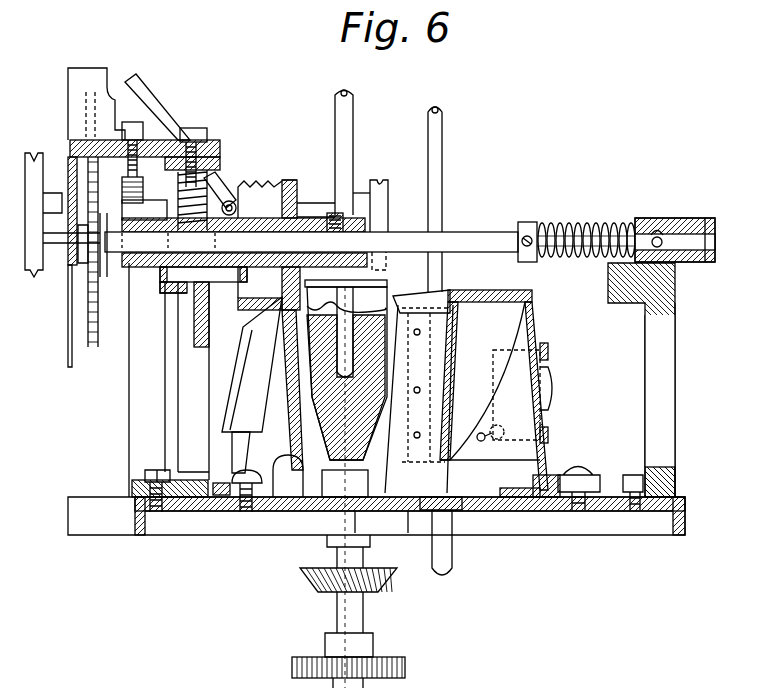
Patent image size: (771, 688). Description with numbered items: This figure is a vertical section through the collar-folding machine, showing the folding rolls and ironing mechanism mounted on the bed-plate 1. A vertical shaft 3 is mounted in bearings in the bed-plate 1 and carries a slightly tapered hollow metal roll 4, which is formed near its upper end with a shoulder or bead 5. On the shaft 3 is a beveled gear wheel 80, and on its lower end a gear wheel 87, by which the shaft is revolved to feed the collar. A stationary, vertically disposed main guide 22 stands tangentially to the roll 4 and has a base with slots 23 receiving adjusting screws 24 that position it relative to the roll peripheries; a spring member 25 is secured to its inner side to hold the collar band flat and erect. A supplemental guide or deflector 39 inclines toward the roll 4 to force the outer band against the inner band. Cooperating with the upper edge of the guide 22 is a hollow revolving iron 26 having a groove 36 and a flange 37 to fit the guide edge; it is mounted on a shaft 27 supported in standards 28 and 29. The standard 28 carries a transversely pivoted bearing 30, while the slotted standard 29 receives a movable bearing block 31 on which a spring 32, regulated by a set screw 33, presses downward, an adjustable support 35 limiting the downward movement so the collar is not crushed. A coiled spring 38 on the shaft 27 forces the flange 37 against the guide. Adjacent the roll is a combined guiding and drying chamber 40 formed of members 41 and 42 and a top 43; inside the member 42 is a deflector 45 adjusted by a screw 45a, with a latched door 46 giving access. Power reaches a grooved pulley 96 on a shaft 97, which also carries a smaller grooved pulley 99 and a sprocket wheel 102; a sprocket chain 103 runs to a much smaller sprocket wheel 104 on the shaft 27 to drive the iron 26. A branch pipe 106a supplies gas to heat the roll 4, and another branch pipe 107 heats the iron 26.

The bed-plate 1 is at (657, 509).
The vertical shaft 3 is at (341, 465).
The metal roll 4 is at (398, 317).
The shoulder or bead 5 is at (393, 287).
The main guide 22 is at (263, 510).
The slots 23 is at (222, 510).
The adjusting screws 24 is at (247, 510).
The spring member 25 is at (297, 368).
The hollow revolving iron 26 is at (280, 185).
The shaft 27 is at (457, 238).
The standard 28 is at (663, 340).
The standard 29 is at (190, 433).
The pivoted bearing 30 is at (667, 218).
The bearing block 31 is at (162, 297).
The spring 32 is at (228, 200).
The set screw 33 is at (197, 133).
The adjustable support 35 is at (203, 275).
The groove 36 is at (297, 182).
The flange 37 is at (300, 180).
The coiled spring 38 is at (552, 225).
The supplemental guide or deflector 39 is at (259, 403).
The combined guiding and drying chamber 40 is at (494, 396).
The member 41 is at (452, 430).
The member 42 is at (543, 457).
The top 43 is at (500, 285).
The deflector 45 is at (518, 343).
The screw 45a is at (500, 425).
The door 46 is at (543, 417).
The beveled gear wheel 80 is at (307, 580).
The gear wheel 87 is at (382, 657).
The grooved pulley 96 is at (33, 158).
The shaft 97 is at (317, 203).
The grooved pulley 99 is at (378, 216).
The sprocket wheel 102 is at (92, 348).
The sprocket chain 103 is at (90, 310).
The sprocket wheel 104 is at (90, 280).
The branch pipe 106a is at (353, 100).
The branch pipe 107 is at (157, 100).